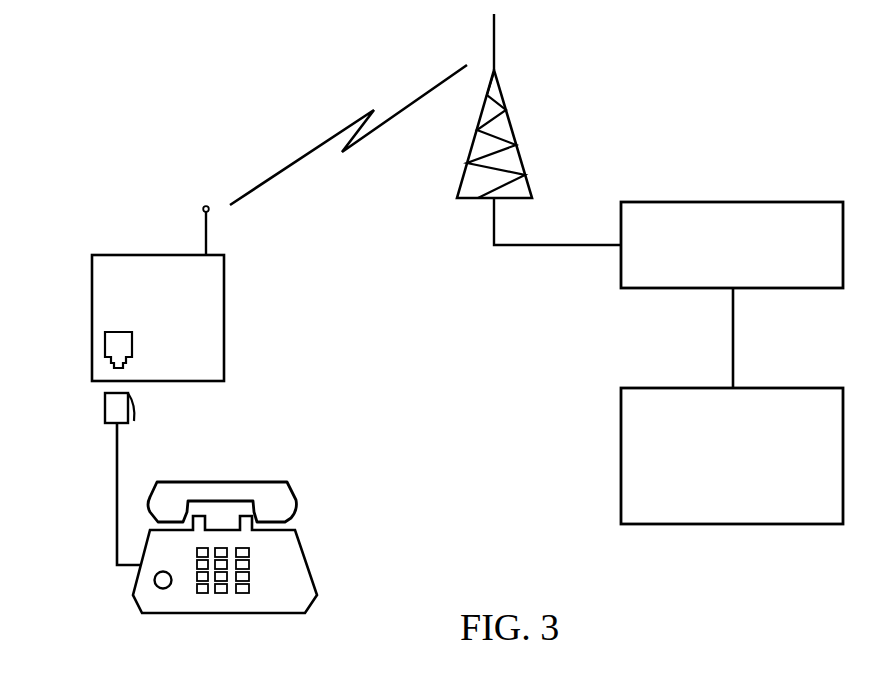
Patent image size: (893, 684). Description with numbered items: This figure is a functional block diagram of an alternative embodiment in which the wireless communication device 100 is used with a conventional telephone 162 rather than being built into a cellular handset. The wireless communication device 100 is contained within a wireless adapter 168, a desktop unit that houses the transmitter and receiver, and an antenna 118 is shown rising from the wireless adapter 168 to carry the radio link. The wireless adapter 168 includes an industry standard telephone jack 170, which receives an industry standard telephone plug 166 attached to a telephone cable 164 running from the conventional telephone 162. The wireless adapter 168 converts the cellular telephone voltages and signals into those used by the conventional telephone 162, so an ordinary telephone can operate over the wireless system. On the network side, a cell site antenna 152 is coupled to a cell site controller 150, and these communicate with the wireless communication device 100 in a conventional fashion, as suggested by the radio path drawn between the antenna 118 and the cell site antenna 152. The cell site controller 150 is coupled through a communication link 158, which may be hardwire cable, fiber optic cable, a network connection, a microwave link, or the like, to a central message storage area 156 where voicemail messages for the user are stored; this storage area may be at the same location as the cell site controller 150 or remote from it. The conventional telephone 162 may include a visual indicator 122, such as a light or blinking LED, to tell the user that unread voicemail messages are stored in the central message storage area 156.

The wireless communication device 100 is at (324, 388).
The antenna 118 is at (206, 246).
The visual indicator 122 is at (159, 589).
The cell site controller 150 is at (777, 202).
The cell site antenna 152 is at (515, 146).
The central message storage area 156 is at (778, 388).
The communication link 158 is at (733, 340).
The conventional telephone 162 is at (305, 560).
The telephone cable 164 is at (117, 470).
The telephone plug 166 is at (105, 403).
The wireless adapter 168 is at (224, 320).
The telephone jack 170 is at (112, 331).